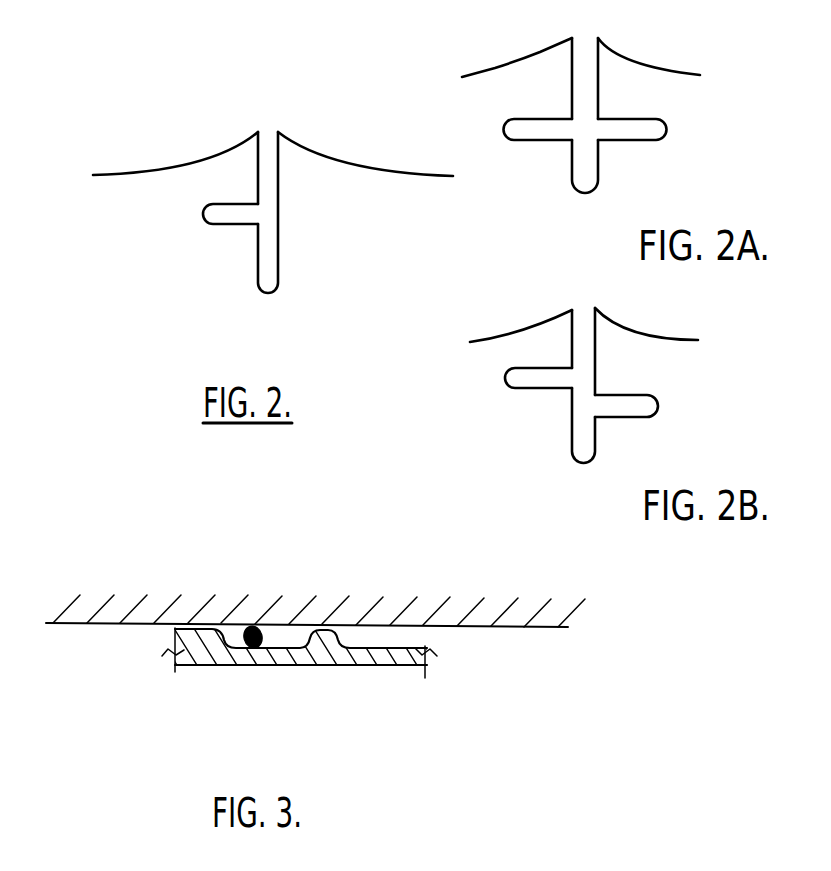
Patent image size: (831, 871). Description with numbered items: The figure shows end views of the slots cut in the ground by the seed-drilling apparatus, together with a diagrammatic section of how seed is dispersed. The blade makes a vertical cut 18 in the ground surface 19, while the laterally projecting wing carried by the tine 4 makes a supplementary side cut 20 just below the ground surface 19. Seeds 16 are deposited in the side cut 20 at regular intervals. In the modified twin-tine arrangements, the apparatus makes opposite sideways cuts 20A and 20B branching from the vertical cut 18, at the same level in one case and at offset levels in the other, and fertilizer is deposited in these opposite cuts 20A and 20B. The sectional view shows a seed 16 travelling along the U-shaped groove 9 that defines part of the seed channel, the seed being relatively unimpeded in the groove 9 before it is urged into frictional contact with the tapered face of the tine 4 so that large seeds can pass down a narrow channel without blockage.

In FIG. 3, the tine 4 is at (83, 623).
In FIG. 3, the U-shaped groove 9 is at (303, 643).
In FIG. 3, the seeds 16 is at (250, 630).
In FIG. 2, the vertical cut 18 is at (270, 228).
In FIG. 2A, the vertical cut 18 is at (585, 102).
In FIG. 2B, the vertical cut 18 is at (580, 425).
In FIG. 2, the ground surface 19 is at (328, 157).
In FIG. 2, the supplementary side cut 20 is at (233, 214).
In FIG. 2A, the supplementary side cut 20 is at (538, 132).
In FIG. 2B, the supplementary side cut 20 is at (530, 379).
In FIG. 2A, the sideways cut 20A is at (647, 133).
In FIG. 2B, the sideways cut 20B is at (642, 407).